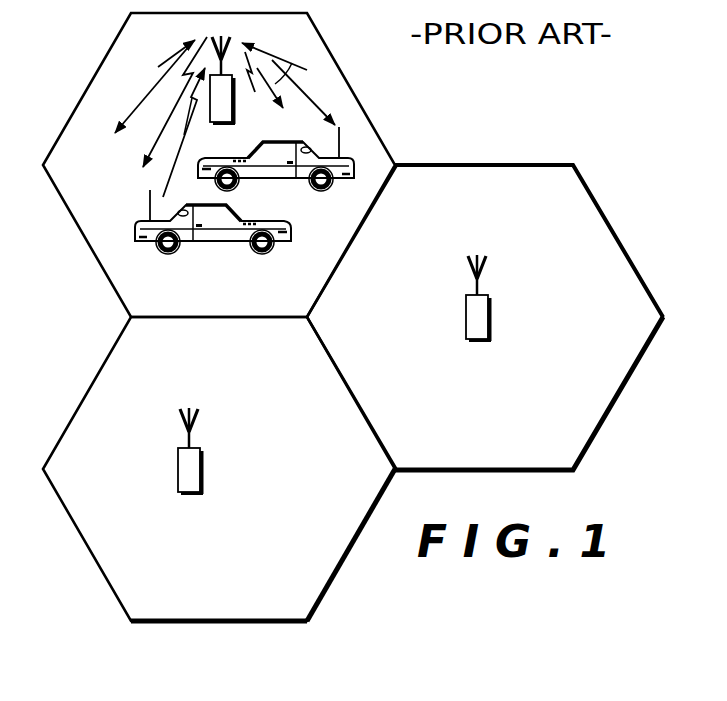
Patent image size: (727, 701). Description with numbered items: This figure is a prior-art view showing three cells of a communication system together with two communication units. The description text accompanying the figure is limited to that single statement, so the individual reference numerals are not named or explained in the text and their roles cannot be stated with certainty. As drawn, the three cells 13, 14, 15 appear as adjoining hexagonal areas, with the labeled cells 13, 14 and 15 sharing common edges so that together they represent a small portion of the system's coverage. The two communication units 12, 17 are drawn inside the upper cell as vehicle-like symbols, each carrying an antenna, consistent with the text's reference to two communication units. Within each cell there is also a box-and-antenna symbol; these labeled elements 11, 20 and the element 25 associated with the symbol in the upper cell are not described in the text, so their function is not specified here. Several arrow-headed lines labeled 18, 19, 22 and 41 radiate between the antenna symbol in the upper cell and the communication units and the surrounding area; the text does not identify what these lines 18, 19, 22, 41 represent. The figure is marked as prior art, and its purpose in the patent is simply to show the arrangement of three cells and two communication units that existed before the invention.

The base station 11 is at (490, 327).
The mobile station / base station 12 is at (176, 467).
The cell 13 is at (284, 300).
The cell 14 is at (466, 423).
The cell 15 is at (291, 563).
The mobile station 17 is at (205, 233).
The radio signal 18 is at (176, 155).
The radio signal 19 is at (152, 148).
The base station 20 is at (258, 93).
The radio signal 22 is at (134, 110).
The base station transceiver 25 is at (233, 125).
The radio signal 41 is at (318, 114).